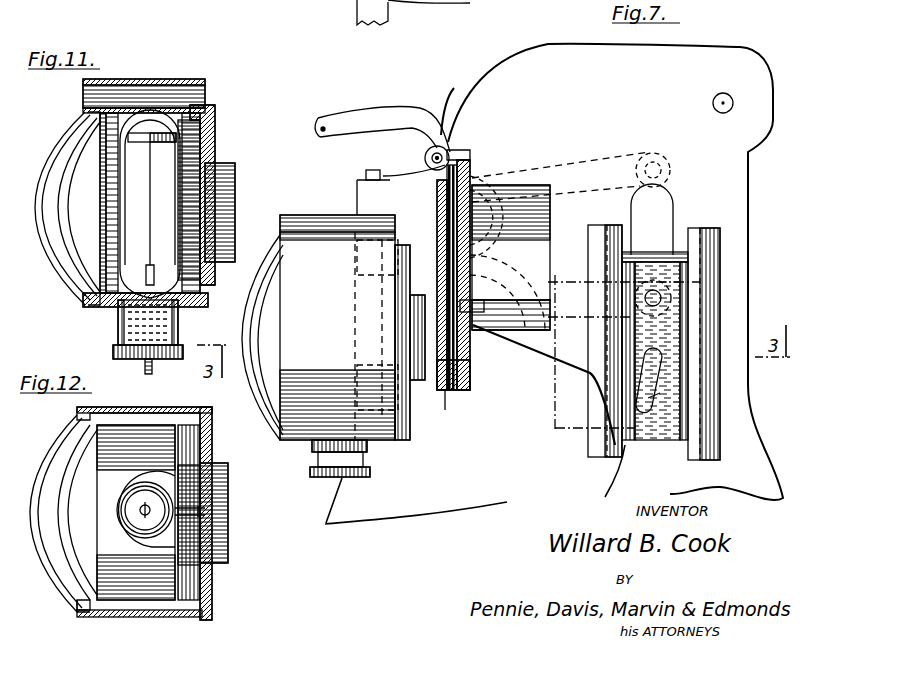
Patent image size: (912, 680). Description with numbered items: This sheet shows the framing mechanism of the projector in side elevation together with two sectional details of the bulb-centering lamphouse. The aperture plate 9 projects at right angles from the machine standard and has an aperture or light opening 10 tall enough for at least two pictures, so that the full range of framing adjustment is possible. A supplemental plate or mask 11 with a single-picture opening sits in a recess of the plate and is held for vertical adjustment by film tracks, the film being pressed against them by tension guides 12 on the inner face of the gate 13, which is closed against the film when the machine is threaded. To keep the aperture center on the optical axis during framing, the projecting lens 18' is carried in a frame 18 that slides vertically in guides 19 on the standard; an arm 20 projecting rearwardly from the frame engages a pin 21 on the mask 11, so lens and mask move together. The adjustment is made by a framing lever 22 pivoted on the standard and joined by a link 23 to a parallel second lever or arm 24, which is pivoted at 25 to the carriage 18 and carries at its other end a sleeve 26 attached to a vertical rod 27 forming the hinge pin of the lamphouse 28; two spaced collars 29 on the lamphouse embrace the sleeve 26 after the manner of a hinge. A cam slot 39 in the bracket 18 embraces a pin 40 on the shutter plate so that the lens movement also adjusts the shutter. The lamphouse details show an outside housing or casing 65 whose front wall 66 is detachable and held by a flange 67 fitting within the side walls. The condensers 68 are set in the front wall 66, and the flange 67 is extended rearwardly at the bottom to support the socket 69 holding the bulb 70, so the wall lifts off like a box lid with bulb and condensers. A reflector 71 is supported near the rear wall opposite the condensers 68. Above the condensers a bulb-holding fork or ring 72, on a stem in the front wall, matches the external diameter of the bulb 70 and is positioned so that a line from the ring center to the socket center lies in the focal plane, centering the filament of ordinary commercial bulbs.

In FIG. 7, the aperture plate 9 is at (470, 166).
In FIG. 7, the aperture or light opening 10 is at (465, 355).
In FIG. 7, the supplemental plate or mask 11 is at (484, 300).
In FIG. 7, the tension guides 12 is at (441, 365).
In FIG. 7, the gate 13 is at (446, 265).
In FIG. 7, the frame or carriage 18 is at (554, 284).
In FIG. 7, the projecting lens 18' is at (599, 372).
In FIG. 7, the guides 19 is at (600, 232).
In FIG. 7, the arm 20 is at (535, 343).
In FIG. 7, the pin 21 is at (472, 338).
In FIG. 7, the framing lever 22 is at (360, 116).
In FIG. 7, the link 23 is at (570, 226).
In FIG. 7, the second lever or arm 24 is at (515, 275).
In FIG. 7, the pivot 25 is at (655, 290).
In FIG. 7, the sleeve 26 is at (352, 318).
In FIG. 7, the vertical rod 27 is at (372, 170).
In FIG. 7, the lamphouse 28 is at (284, 444).
In FIG. 7, the collars 29 is at (360, 262).
In FIG. 7, the cam slot 39 is at (660, 393).
In FIG. 7, the pin 40 is at (655, 355).
In FIG. 12, the outside housing or casing 65 is at (100, 615).
In FIG. 11, the front wall 66 is at (213, 290).
In FIG. 12, the front wall 66 is at (213, 594).
In FIG. 11, the flange 67 is at (196, 312).
In FIG. 12, the flange 67 is at (190, 410).
In FIG. 11, the condensers 68 is at (235, 182).
In FIG. 12, the condensers 68 is at (226, 468).
In FIG. 11, the socket 69 is at (128, 336).
In FIG. 11, the bulb 70 is at (168, 122).
In FIG. 12, the bulb 70 is at (136, 520).
In FIG. 11, the reflector 71 is at (88, 183).
In FIG. 12, the reflector 71 is at (80, 495).
In FIG. 11, the bulb-holding fork or ring 72 is at (139, 142).
In FIG. 12, the bulb-holding fork or ring 72 is at (170, 490).